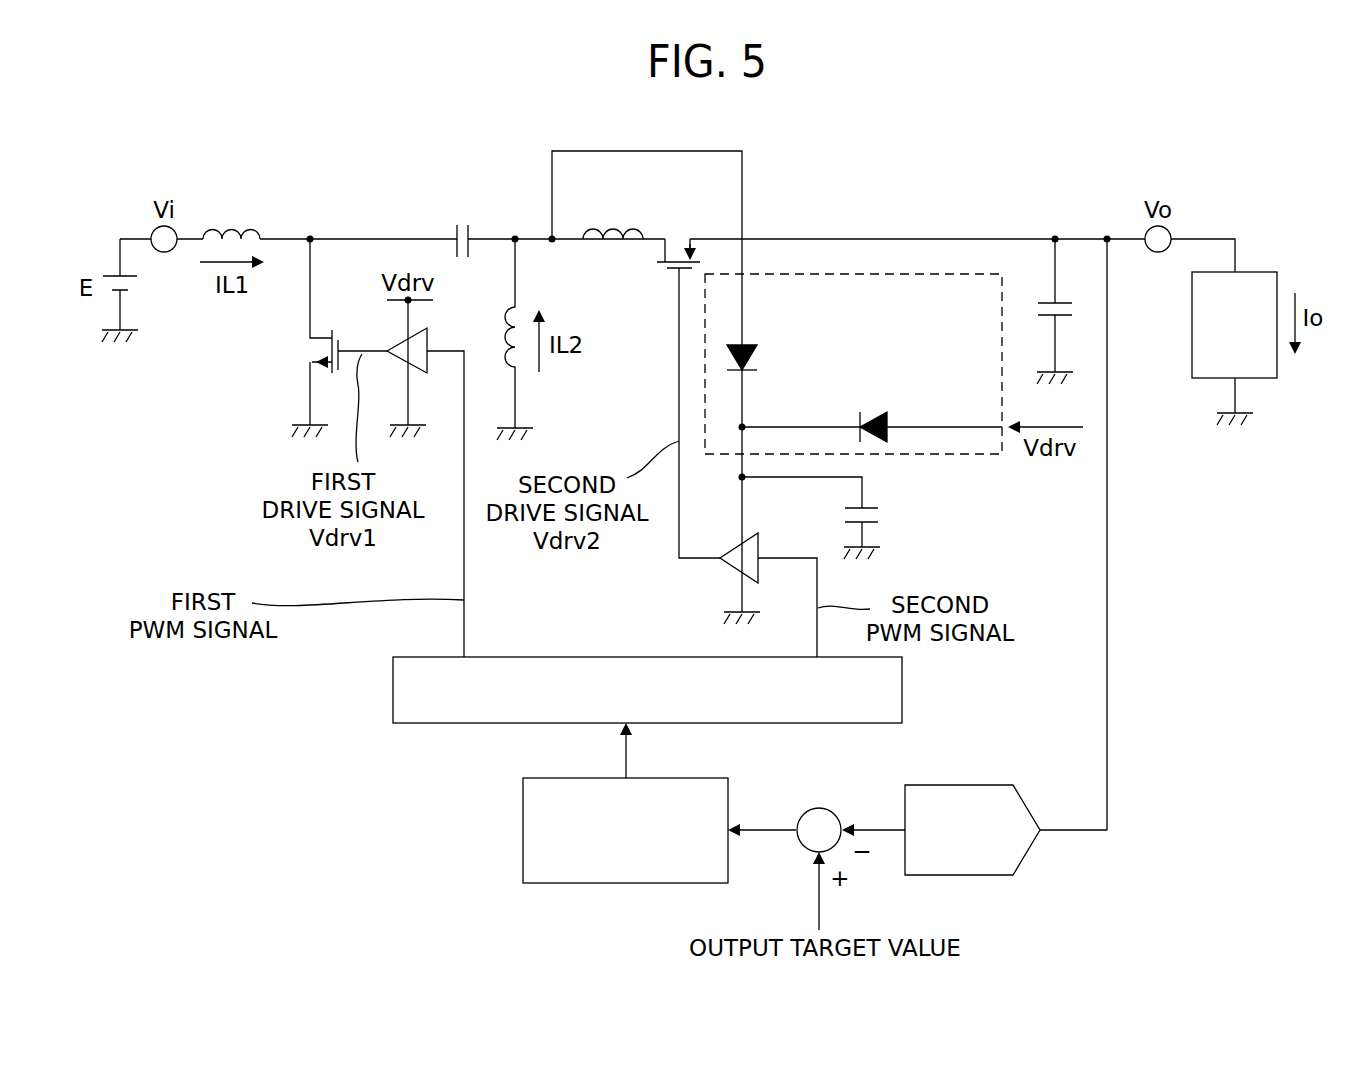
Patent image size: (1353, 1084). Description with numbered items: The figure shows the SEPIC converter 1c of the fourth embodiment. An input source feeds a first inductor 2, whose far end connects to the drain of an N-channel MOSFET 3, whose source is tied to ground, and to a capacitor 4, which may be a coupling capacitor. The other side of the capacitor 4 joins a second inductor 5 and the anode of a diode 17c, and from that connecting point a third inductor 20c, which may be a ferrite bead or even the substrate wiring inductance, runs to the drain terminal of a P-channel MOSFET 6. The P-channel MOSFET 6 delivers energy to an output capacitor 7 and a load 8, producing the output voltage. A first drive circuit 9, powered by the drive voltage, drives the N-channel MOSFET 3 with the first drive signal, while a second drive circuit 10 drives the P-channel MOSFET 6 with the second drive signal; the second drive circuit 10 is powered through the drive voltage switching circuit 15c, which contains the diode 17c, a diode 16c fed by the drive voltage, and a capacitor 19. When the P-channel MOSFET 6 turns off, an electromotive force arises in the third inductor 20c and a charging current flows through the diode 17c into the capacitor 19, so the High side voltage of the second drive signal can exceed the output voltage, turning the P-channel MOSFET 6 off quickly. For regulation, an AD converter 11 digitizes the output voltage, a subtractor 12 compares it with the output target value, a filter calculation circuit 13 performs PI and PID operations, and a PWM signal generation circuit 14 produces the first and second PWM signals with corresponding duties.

The SEPIC converter 1c is at (672, 138).
The first inductor 2 is at (234, 222).
The N-channel MOSFET 3 is at (310, 355).
The capacitor 4 is at (462, 225).
The second inductor 5 is at (523, 375).
The P-channel MOSFET 6 is at (677, 237).
The output capacitor 7 is at (1065, 300).
The load 8 is at (1258, 272).
The first drive circuit 9 is at (397, 343).
The second drive circuit 10 is at (730, 572).
The AD converter 11 is at (990, 785).
The subtractor 12 is at (832, 808).
The filter calculation circuit 13 is at (553, 883).
The PWM signal generation circuit 14 is at (393, 698).
The drive voltage switching circuit 15c is at (1000, 457).
The diode 16c is at (880, 412).
The diode 17c is at (752, 347).
The capacitor 19 is at (880, 515).
The third inductor 20c is at (618, 229).